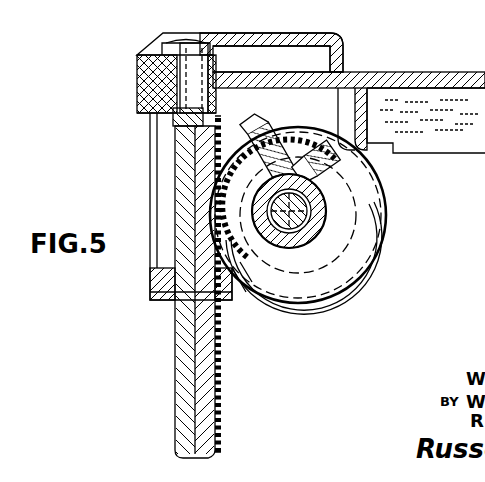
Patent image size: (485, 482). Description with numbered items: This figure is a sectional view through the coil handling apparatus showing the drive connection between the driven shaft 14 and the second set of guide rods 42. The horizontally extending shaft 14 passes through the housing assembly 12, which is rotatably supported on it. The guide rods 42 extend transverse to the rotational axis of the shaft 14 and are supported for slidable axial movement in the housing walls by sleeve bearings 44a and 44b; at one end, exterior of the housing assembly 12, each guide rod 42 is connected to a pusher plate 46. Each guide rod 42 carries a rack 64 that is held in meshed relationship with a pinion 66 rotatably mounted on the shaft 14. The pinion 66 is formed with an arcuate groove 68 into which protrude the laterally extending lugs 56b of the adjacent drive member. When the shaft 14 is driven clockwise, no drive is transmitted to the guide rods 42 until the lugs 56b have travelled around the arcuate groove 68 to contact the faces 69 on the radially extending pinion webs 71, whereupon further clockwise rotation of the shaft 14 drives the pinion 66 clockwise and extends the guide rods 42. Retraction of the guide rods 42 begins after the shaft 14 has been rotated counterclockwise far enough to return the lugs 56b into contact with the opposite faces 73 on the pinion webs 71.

The housing assembly 12 is at (369, 72).
The shaft 14 is at (298, 212).
The guide rods 42 is at (176, 383).
The sleeve bearing 44a is at (150, 90).
The sleeve bearing 44b is at (150, 286).
The pusher plate 46 is at (274, 46).
The lugs 56b is at (314, 137).
The racks 64 is at (221, 384).
The pinions 66 is at (292, 234).
The arcuate grooves 68 is at (335, 258).
The faces 69 is at (282, 196).
The pinion webs 71 is at (262, 132).
The faces 73 is at (318, 162).